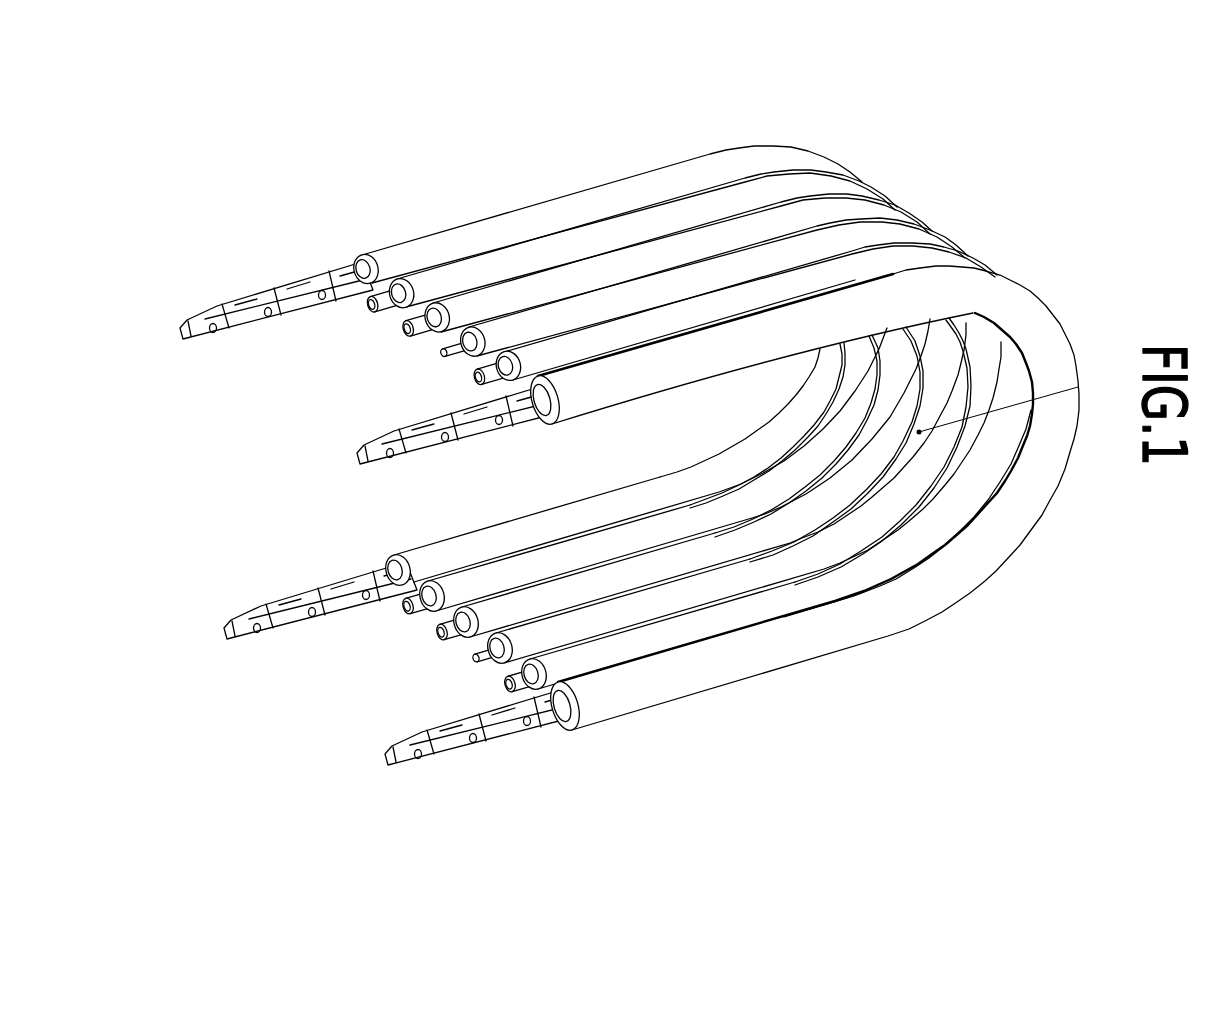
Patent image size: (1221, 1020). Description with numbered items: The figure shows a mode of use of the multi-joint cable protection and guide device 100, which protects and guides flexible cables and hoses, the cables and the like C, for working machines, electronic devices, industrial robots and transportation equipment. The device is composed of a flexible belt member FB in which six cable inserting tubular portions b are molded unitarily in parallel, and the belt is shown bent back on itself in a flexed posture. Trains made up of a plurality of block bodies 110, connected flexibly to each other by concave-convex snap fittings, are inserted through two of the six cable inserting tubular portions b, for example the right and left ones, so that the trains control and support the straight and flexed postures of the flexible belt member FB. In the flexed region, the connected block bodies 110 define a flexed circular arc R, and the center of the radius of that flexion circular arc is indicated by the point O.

The multi-joint cable protection and guide device 100 is at (258, 278).
The block body 110 is at (242, 322).
The cable inserting tubular portion b is at (830, 168).
The flexible belt member FB is at (1097, 251).
The cables and the like C is at (474, 384).
The center of the radius of the flexion circular arc O is at (897, 444).
The flexed circular arc R is at (948, 416).